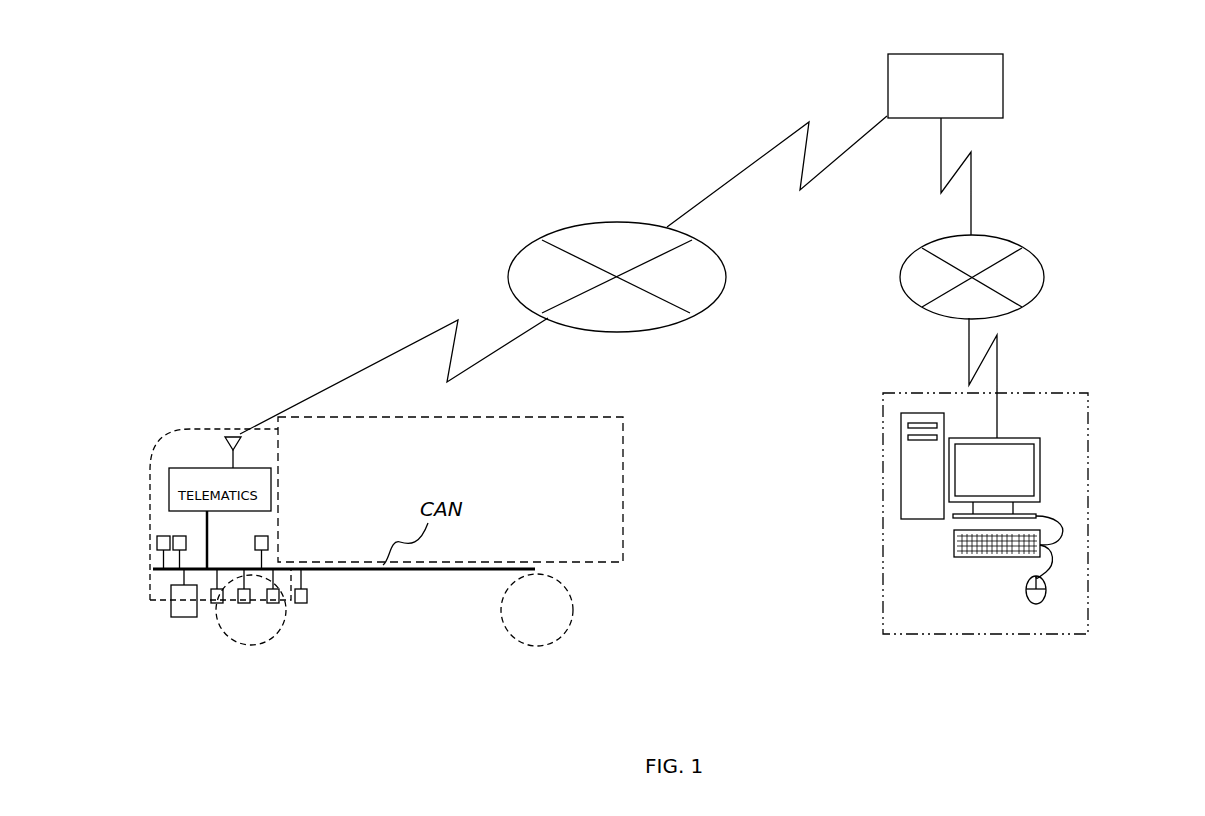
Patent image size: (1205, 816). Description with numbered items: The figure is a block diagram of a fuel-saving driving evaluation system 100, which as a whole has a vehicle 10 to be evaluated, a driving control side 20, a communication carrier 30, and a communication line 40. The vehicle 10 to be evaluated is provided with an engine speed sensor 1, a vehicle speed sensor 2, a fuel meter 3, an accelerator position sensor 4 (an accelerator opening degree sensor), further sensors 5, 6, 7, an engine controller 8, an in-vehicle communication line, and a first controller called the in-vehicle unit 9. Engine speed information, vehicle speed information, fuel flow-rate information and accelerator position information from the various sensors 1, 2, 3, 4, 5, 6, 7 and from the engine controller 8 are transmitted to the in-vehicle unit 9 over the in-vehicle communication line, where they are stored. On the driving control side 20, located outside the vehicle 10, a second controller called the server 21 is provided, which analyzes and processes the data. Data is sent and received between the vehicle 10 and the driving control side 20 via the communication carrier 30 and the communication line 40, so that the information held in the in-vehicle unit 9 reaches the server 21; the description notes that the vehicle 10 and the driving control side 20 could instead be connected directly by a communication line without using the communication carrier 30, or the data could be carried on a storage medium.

The fuel-saving driving evaluation system 100 is at (370, 185).
The vehicle to be evaluated 10 is at (622, 463).
The in-vehicle unit 9 is at (215, 468).
The engine speed sensor 1 is at (245, 603).
The vehicle speed sensor 2 is at (307, 598).
The fuel meter 3 is at (273, 603).
The accelerator position sensor 4 is at (160, 537).
The sensor 5 is at (179, 536).
The sensor 6 is at (215, 603).
The sensor 7 is at (268, 540).
The engine controller 8 is at (171, 613).
The communication line 40 is at (573, 230).
The communication carrier 30 is at (1003, 85).
The driving control side 20 is at (1025, 492).
The server 21 is at (1060, 479).